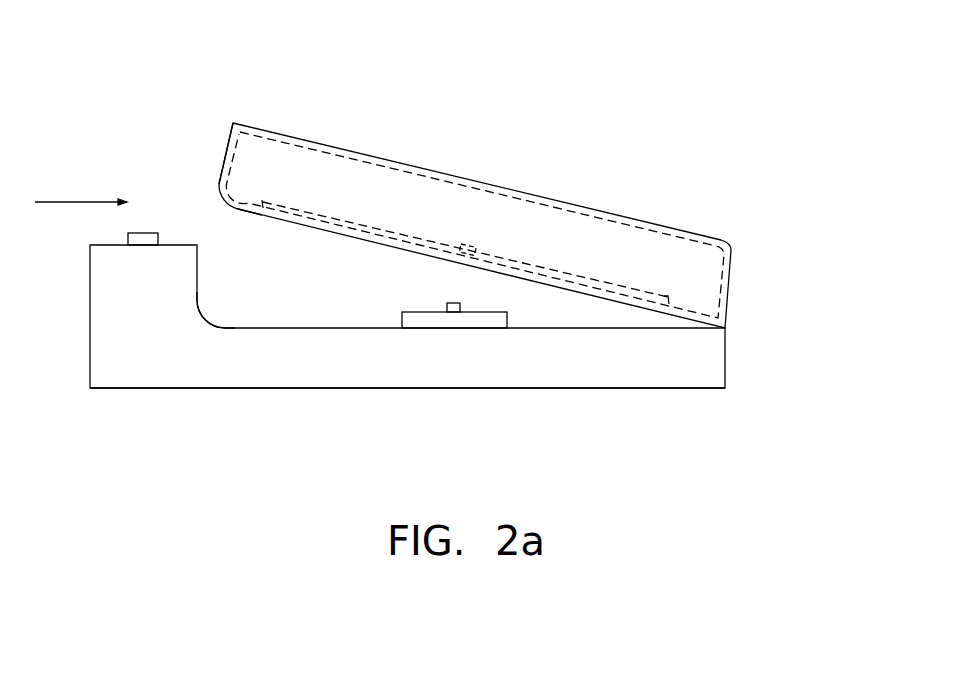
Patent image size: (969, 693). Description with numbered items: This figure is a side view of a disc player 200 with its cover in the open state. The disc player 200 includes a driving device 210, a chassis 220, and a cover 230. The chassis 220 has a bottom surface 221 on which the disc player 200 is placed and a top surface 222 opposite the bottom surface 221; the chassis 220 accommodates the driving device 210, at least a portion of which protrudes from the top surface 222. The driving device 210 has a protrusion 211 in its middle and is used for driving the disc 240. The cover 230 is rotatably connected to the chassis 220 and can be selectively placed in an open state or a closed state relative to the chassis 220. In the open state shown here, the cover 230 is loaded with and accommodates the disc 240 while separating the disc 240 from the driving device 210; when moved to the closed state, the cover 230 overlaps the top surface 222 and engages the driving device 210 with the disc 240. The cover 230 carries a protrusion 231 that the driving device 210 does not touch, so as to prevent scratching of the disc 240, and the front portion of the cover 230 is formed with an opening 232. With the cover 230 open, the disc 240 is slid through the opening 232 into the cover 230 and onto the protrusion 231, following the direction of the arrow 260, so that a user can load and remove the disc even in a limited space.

The disc player 200 is at (488, 254).
The driving device 210 is at (507, 320).
The protrusion 211 is at (448, 303).
The chassis 220 is at (727, 363).
The bottom surface 221 is at (660, 389).
The top surface 222 is at (206, 317).
The cover 230 is at (652, 221).
The protrusion 231 is at (257, 213).
The opening 232 is at (225, 145).
The disc 240 is at (610, 283).
The arrow 260 is at (81, 190).